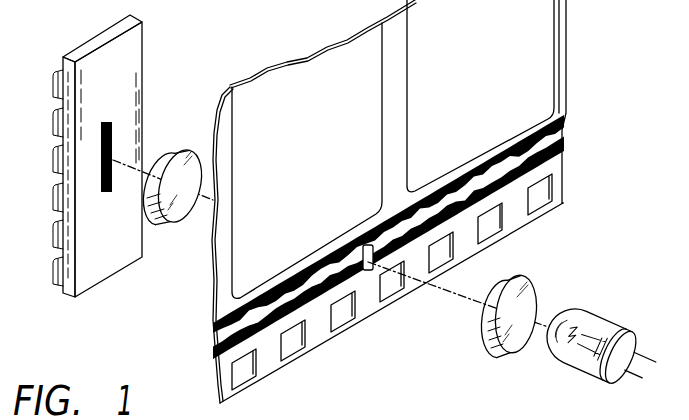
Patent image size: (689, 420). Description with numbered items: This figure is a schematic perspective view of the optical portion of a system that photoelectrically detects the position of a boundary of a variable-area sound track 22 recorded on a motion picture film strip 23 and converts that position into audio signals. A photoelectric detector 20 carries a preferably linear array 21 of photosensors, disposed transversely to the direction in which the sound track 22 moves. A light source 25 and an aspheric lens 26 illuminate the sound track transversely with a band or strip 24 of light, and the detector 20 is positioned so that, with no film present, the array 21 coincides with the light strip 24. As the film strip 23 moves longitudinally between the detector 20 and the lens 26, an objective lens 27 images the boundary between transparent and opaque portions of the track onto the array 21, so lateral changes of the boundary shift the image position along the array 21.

The photoelectric detector 20 is at (125, 45).
The array of photosensors 21 is at (112, 127).
The objective lens 27 is at (168, 153).
The motion picture film strip 23 is at (577, 102).
The sound track 22 is at (547, 147).
The strip of light 24 is at (365, 250).
The aspheric lens 26 is at (533, 280).
The light source 25 is at (600, 318).